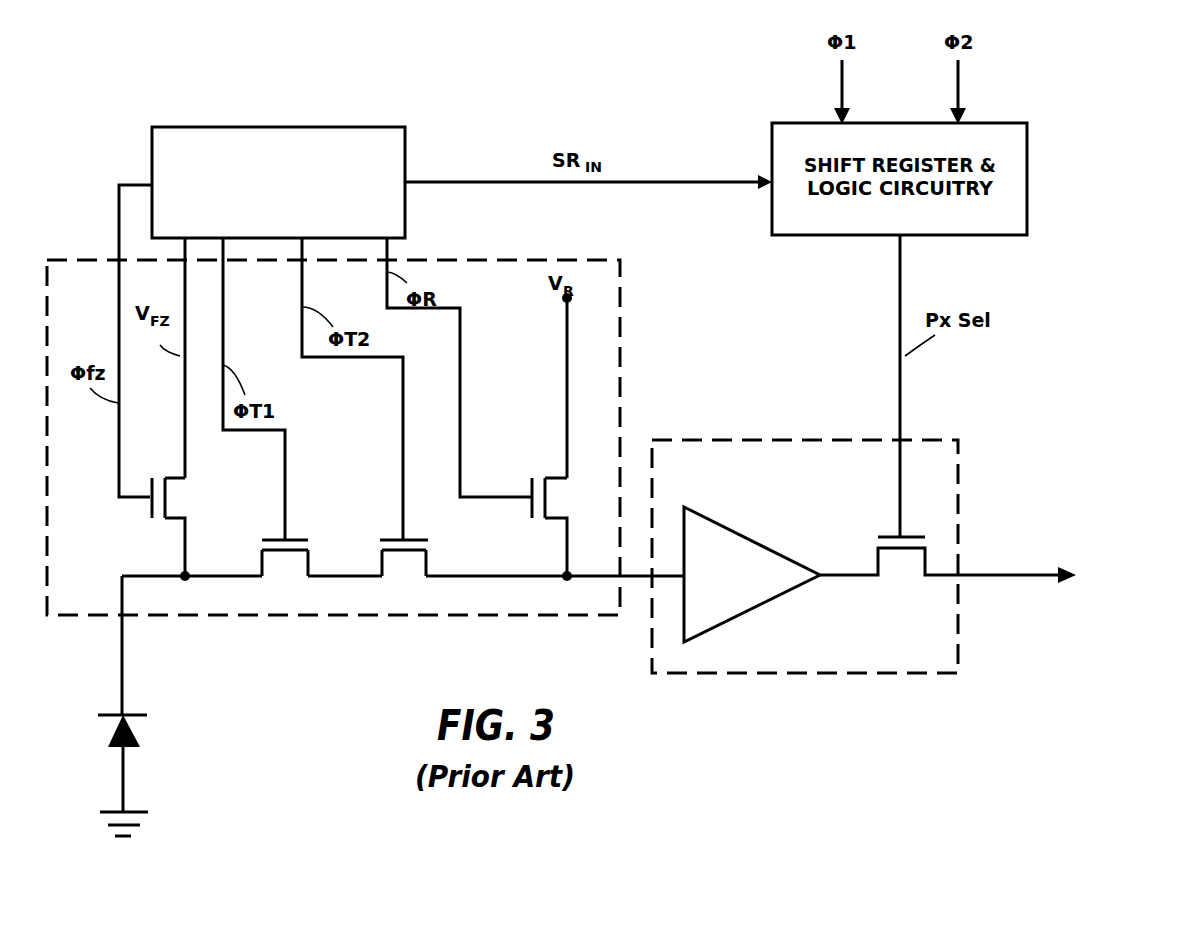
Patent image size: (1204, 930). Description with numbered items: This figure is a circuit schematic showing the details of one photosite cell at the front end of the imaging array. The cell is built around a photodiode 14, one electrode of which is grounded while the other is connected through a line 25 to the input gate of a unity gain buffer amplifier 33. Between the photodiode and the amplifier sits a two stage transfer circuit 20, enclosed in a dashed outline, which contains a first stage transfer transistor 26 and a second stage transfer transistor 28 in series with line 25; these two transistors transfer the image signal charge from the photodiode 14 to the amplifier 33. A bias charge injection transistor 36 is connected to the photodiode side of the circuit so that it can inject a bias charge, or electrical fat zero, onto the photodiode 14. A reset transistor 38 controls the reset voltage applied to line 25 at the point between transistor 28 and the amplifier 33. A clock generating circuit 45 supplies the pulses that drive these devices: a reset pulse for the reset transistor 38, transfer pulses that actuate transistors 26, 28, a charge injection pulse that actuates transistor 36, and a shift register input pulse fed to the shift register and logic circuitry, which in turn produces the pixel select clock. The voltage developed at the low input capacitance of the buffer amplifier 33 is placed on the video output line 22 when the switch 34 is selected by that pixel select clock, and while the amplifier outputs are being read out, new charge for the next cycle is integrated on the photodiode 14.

The clock generating circuit 45 is at (250, 127).
The bias charge injection transistor 36 is at (177, 477).
The first stage transfer transistor 26 is at (310, 560).
The second stage transfer transistor 28 is at (428, 566).
The reset transistor 38 is at (553, 473).
The line 25 is at (122, 660).
The photodiode 14 is at (113, 727).
The two stage transfer circuit 20 is at (280, 617).
The unity gain buffer amplifier 33 is at (958, 455).
The switch 34 is at (900, 563).
The video output line 22 is at (1020, 570).